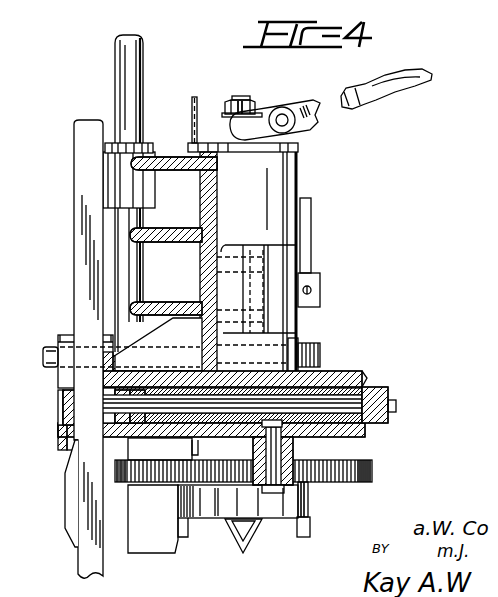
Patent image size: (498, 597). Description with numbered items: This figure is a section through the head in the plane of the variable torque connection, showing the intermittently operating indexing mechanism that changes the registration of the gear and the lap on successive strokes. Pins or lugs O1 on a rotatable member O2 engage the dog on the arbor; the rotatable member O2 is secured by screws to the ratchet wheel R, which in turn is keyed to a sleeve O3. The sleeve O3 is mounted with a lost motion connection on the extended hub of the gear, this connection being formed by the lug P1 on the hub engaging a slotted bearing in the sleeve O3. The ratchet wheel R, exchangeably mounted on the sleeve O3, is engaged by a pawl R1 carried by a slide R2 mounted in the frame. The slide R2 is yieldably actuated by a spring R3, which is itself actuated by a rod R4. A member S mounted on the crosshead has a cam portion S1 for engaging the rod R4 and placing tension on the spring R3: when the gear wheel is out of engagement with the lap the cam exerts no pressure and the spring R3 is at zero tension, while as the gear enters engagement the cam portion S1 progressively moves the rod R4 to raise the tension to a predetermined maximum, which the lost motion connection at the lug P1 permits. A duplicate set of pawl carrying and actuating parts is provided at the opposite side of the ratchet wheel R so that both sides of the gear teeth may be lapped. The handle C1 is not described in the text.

The rotatable member O2 is at (132, 114).
The handle C1 is at (430, 81).
The slide R2 is at (313, 390).
The spring R3 is at (348, 391).
The rod R4 is at (396, 408).
The cam portion S1 is at (65, 490).
The member mounted on the crosshead S is at (80, 558).
The lug P1 is at (192, 448).
The pawl R1 is at (250, 472).
The sleeve O3 is at (293, 448).
The ratchet wheel R is at (372, 468).
The pins or lugs O1 is at (310, 530).